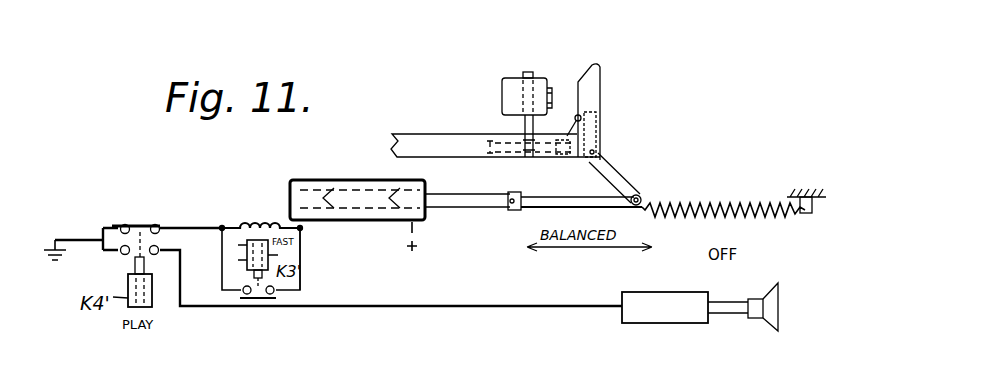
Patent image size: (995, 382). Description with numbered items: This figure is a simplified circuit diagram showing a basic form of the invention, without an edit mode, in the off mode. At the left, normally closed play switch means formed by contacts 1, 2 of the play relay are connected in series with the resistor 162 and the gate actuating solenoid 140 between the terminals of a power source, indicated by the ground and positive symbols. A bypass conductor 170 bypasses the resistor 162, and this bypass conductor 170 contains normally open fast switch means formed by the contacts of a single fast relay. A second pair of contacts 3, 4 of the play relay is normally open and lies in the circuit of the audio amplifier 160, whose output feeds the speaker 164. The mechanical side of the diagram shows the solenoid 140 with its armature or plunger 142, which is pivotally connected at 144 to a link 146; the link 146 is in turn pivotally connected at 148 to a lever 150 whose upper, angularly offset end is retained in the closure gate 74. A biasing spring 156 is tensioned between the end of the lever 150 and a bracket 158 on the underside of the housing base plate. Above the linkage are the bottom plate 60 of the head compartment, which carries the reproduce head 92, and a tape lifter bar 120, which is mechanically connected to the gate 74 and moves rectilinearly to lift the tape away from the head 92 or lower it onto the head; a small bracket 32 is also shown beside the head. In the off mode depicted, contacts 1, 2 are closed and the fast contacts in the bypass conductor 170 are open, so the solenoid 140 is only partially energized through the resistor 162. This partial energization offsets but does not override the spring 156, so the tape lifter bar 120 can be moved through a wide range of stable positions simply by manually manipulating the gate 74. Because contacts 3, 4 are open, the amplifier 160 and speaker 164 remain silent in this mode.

The contact 1 is at (122, 220).
The contact 2 is at (159, 221).
The contact 3 is at (121, 257).
The contact 4 is at (159, 258).
The bracket 32 is at (550, 90).
The bottom plate 60 is at (415, 134).
The closure gate 74 is at (603, 80).
The reproduce head 92 is at (502, 84).
The tape lifter bar 120 is at (523, 72).
The gate actuating solenoid 140 is at (342, 180).
The armature or plunger 142 is at (476, 208).
The pivotal connection 144 is at (512, 193).
The link 146 is at (574, 202).
The pivotal connection 148 is at (640, 195).
The lever 150 is at (612, 178).
The biasing spring 156 is at (700, 203).
The bracket 158 is at (808, 213).
The audio amplifier 160 is at (698, 323).
The resistor 162 is at (262, 222).
The speaker 164 is at (754, 319).
The bypass conductor 170 is at (302, 250).